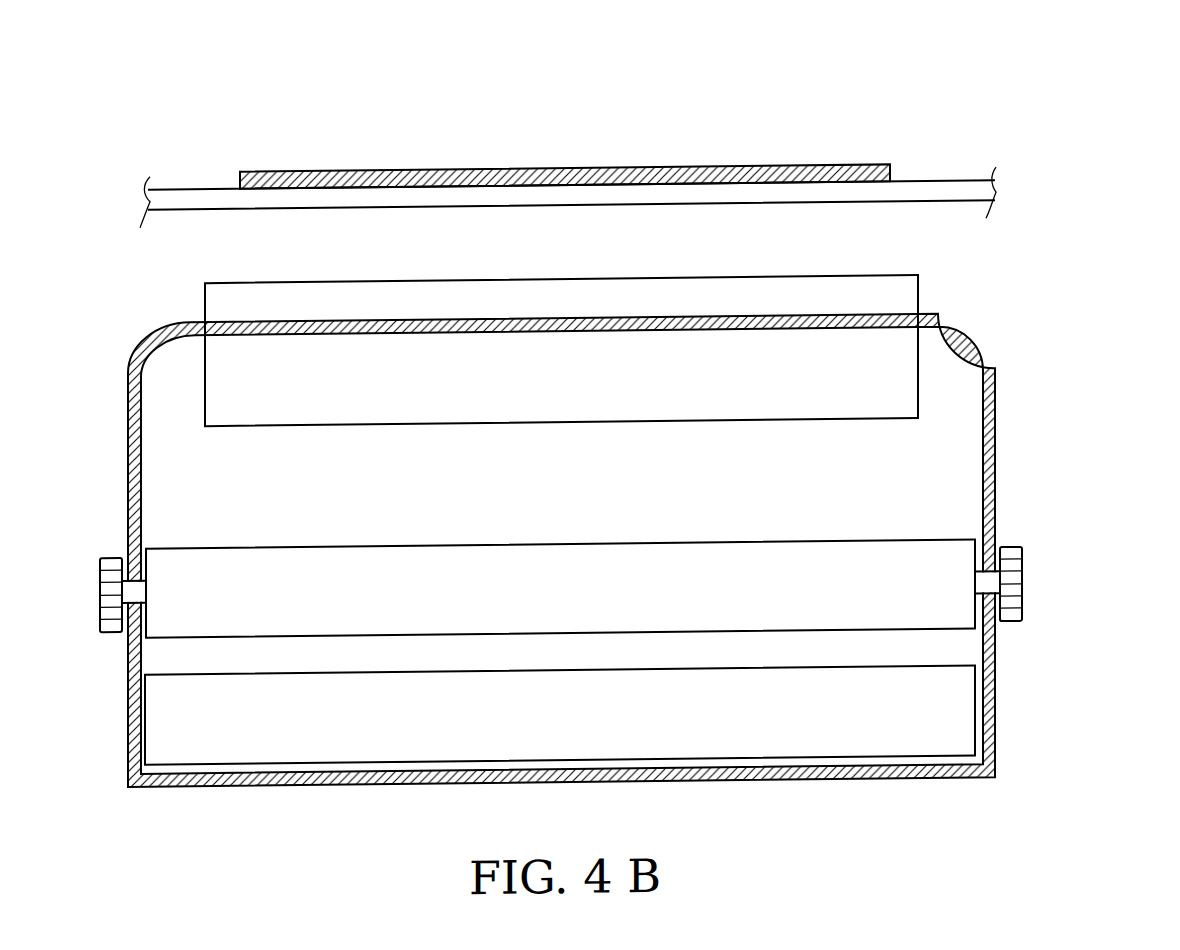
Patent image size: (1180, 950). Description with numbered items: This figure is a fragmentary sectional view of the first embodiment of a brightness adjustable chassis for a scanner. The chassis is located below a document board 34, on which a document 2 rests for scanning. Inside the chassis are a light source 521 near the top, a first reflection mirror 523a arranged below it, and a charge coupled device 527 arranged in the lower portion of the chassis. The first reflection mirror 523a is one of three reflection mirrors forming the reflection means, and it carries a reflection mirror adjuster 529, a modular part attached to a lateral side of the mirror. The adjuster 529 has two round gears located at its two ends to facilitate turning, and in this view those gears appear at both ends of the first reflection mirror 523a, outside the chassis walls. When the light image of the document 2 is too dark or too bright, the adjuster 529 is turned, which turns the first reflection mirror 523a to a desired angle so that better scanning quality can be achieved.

The document 2 is at (725, 142).
The document board 34 is at (924, 199).
The light source 521 is at (907, 367).
The first reflection mirror 523a is at (436, 563).
The charge coupled device (CCD) 527 is at (155, 722).
The reflection mirror adjuster 529 is at (110, 560).